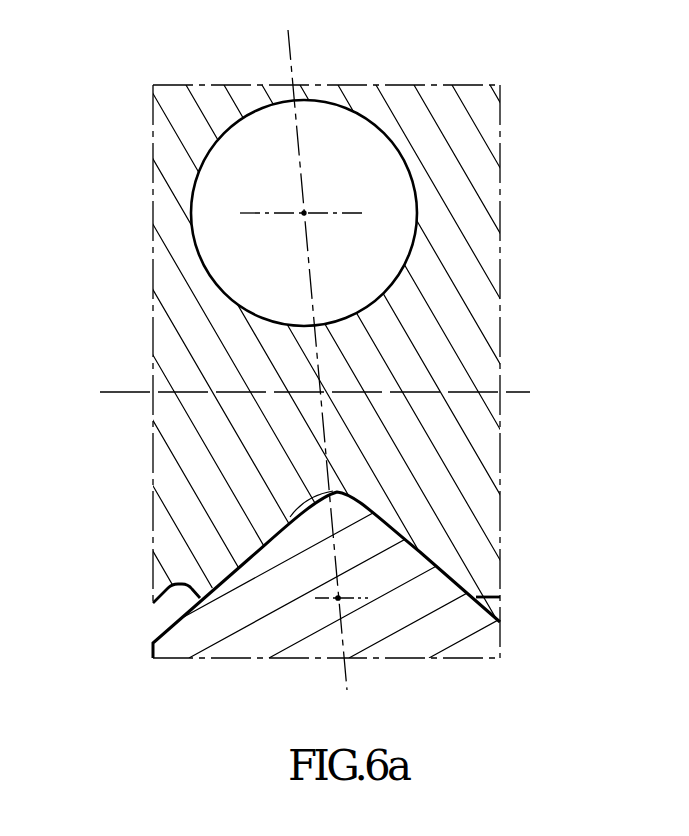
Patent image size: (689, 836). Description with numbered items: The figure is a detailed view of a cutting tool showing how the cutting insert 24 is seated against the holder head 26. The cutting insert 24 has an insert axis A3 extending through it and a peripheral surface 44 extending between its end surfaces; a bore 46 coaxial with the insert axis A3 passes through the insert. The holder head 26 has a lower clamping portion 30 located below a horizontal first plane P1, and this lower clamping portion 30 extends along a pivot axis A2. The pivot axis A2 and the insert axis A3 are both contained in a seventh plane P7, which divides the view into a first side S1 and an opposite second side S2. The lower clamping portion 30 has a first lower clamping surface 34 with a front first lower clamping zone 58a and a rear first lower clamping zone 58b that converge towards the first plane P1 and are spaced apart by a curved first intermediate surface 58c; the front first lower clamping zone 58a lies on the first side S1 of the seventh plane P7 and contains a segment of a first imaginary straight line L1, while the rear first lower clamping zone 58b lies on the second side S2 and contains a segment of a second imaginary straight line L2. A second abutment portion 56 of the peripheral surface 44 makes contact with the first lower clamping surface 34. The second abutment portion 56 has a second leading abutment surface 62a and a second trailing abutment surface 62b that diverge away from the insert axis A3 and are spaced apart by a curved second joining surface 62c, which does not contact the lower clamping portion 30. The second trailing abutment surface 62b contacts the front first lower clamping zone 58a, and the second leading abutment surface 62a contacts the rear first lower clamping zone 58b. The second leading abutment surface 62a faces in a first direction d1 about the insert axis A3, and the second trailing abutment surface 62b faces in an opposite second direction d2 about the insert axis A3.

The cutting insert 24 is at (455, 316).
The bore 46 is at (362, 176).
The insert axis A3 is at (302, 228).
The seventh plane P7 is at (321, 364).
The first plane P1 is at (316, 393).
The first side S1 is at (375, 381).
The second side S2 is at (297, 381).
The lower clamping portion 30 is at (358, 545).
The holder head 26 is at (216, 614).
The second leading abutment surface 62a is at (236, 562).
The second trailing abutment surface 62b is at (438, 568).
The second joining surface 62c is at (297, 517).
The front first lower clamping zone 58a is at (408, 535).
The rear first lower clamping zone 58b is at (255, 548).
The first intermediate surface 58c is at (348, 489).
The first imaginary straight line L1 is at (390, 568).
The second imaginary straight line L2 is at (298, 571).
The first lower clamping surface 34 is at (434, 558).
The peripheral surface 44 is at (450, 582).
The second abutment portion 56 is at (347, 493).
The first direction d1 is at (306, 573).
The second direction d2 is at (381, 571).
The pivot axis A2 is at (339, 603).